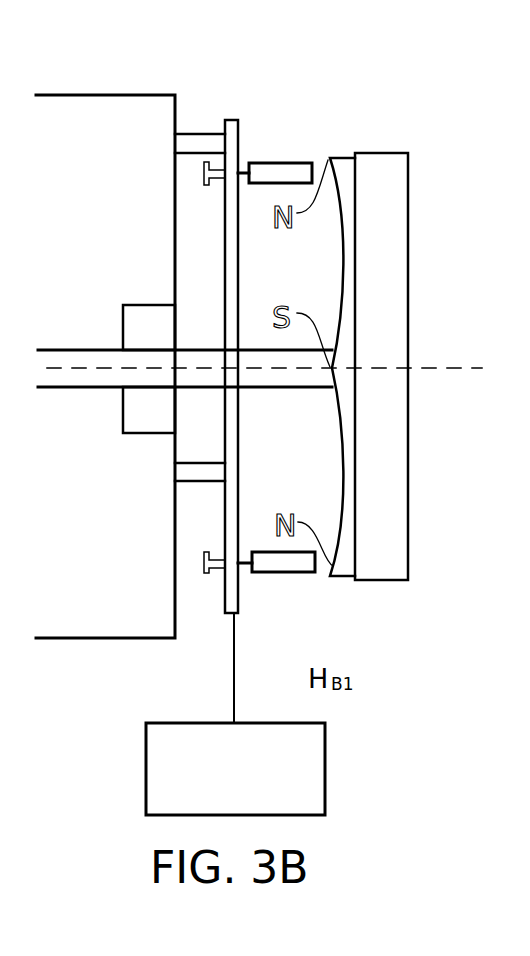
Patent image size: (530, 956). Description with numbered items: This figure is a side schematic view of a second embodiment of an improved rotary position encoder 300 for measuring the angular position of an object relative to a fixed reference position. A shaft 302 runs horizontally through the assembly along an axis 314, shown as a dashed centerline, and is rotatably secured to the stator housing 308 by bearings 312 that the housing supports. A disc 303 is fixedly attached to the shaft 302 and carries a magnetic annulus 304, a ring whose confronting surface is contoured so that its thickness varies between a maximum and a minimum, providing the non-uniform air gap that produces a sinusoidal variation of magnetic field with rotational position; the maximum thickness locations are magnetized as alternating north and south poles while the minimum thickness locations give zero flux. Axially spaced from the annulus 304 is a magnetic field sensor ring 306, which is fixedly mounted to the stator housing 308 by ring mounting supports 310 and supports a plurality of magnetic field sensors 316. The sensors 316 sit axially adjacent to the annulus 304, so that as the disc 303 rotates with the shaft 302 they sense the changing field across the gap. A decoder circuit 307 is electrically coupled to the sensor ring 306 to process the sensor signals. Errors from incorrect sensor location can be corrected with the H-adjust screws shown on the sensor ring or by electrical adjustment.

The position encoder 300 is at (440, 802).
The shaft 302 is at (97, 348).
The disc 303 is at (377, 202).
The magnetic annulus 304 is at (343, 558).
The magnetic field sensor ring 306 is at (240, 133).
The decoder circuit 307 is at (318, 767).
The stator housing 308 is at (96, 95).
The ring mounting supports 310 is at (190, 134).
The bearings 312 is at (147, 315).
The axis of rotation 314 is at (441, 368).
The magnetic field sensors 316 is at (268, 163).